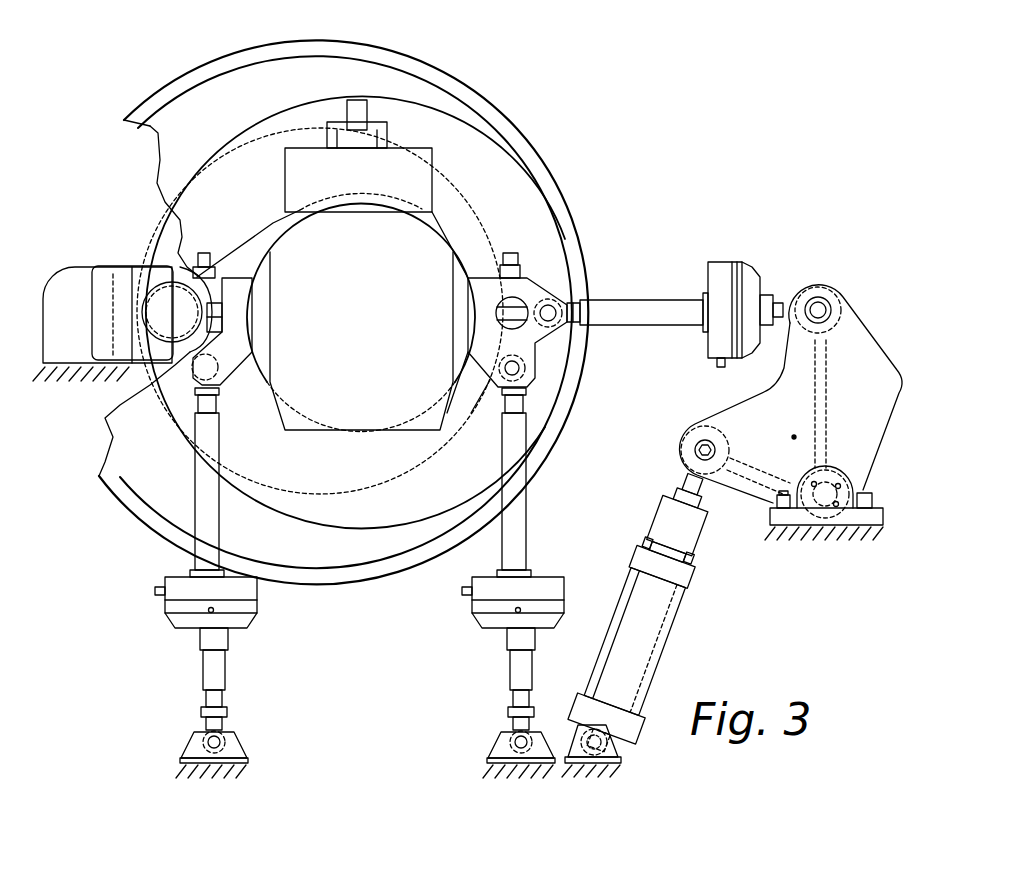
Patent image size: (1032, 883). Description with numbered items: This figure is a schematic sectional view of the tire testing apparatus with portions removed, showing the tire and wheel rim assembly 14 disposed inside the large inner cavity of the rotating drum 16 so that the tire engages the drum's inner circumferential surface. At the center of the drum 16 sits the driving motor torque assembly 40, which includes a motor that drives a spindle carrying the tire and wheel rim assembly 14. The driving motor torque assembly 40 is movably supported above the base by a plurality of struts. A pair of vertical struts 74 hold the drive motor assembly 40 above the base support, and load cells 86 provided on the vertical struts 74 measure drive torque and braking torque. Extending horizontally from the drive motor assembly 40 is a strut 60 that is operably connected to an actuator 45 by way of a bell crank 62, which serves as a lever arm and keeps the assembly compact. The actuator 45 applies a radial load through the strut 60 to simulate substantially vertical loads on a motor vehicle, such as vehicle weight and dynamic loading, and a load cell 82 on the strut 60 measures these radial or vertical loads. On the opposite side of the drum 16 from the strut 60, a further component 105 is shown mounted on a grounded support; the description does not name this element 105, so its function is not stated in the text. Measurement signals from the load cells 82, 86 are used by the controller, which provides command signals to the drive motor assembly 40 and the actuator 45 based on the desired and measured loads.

The tire and wheel rim assembly 14 is at (503, 175).
The rotating drum 16 is at (492, 98).
The driving motor torque assembly 40 is at (445, 240).
The actuator 45 is at (660, 648).
The strut 60 is at (615, 300).
The bell crank 62 is at (858, 317).
The vertical struts 74 is at (195, 478).
The load cell 82 is at (733, 262).
The load cells 86 is at (165, 610).
The motor 105 is at (122, 283).